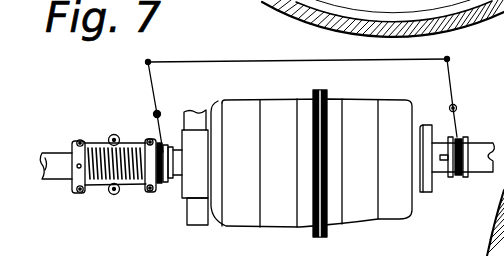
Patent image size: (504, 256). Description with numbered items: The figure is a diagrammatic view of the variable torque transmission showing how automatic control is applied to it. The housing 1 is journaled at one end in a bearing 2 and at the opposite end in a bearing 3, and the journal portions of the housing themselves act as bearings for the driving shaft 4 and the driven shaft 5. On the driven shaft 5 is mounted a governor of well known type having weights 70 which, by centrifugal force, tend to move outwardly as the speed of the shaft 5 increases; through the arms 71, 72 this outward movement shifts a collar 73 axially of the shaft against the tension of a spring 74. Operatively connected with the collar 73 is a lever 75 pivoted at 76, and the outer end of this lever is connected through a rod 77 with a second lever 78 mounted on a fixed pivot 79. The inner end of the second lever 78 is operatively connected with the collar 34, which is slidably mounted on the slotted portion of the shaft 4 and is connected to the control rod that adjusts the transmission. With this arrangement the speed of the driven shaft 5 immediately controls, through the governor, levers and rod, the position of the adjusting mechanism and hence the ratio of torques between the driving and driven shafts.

The housing 1 is at (276, 110).
The bearing 2 is at (427, 193).
The bearing 3 is at (203, 169).
The driving shaft 4 is at (477, 148).
The driven shaft 5 is at (62, 172).
The collar 34 is at (453, 178).
The weights 70 is at (115, 134).
The arm 71 is at (95, 138).
The arm 72 is at (140, 190).
The collar 73 is at (153, 190).
The spring 74 is at (99, 175).
The lever 75 is at (152, 83).
The pivot 76 is at (160, 112).
The rod 77 is at (370, 60).
The second lever 78 is at (454, 81).
The fixed pivot 79 is at (456, 108).